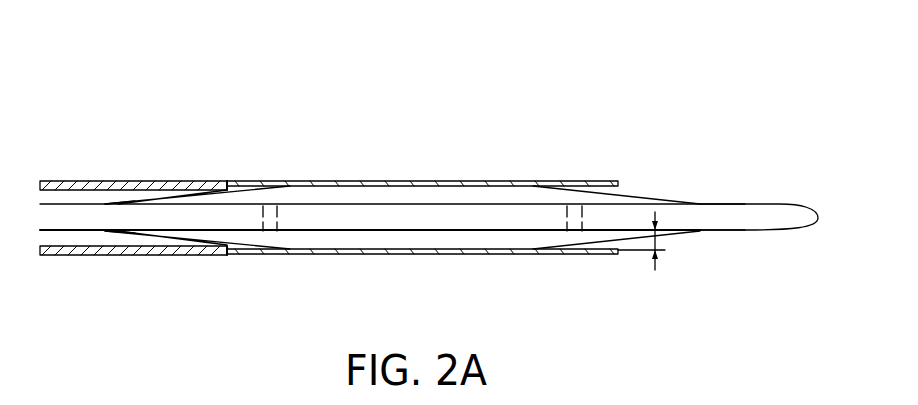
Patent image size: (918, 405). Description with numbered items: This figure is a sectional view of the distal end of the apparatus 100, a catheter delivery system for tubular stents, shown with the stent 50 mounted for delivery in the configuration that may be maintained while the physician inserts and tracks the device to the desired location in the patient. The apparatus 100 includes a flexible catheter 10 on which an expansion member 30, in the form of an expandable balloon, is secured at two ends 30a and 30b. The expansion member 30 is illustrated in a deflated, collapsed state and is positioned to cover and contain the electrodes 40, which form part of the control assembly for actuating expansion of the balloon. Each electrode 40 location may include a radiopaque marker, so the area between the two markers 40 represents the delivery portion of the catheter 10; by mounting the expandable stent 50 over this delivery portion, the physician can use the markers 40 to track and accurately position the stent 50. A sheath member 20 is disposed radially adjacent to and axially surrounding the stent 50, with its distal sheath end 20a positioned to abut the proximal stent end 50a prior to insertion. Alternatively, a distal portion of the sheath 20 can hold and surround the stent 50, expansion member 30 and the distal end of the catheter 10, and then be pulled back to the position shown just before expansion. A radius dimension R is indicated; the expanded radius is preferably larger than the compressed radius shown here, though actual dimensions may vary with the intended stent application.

The apparatus 100 is at (442, 96).
The flexible catheter 10 is at (63, 220).
The sheath member 20 is at (180, 181).
The distal sheath end 20a is at (210, 256).
The expansion member 30 is at (647, 192).
The end of expansion member 30a is at (132, 231).
The end of expansion member 30b is at (735, 231).
The electrodes 40 is at (268, 207).
The expandable stent 50 is at (472, 181).
The proximal stent end 50a is at (247, 256).
The radius R is at (658, 238).